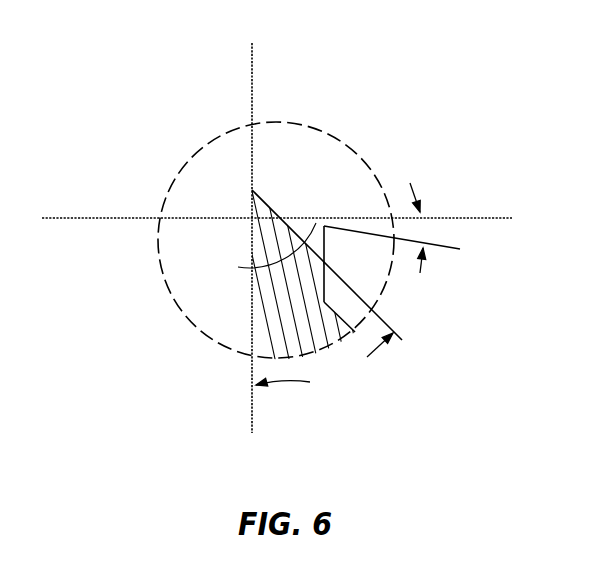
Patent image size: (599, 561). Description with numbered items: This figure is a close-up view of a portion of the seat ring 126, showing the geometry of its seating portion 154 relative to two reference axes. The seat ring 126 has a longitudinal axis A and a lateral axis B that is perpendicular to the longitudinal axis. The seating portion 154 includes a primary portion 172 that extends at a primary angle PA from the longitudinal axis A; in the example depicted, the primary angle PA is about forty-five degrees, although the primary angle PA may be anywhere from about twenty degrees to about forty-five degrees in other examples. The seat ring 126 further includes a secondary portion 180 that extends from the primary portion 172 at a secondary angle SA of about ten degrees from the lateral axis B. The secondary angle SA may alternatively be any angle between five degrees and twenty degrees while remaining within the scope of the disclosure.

The seat ring 126 is at (138, 308).
The seating portion 154 is at (352, 176).
The primary portion 172 is at (274, 212).
The secondary portion 180 is at (259, 252).
The secondary angle SA is at (473, 235).
The primary angle PA is at (362, 373).